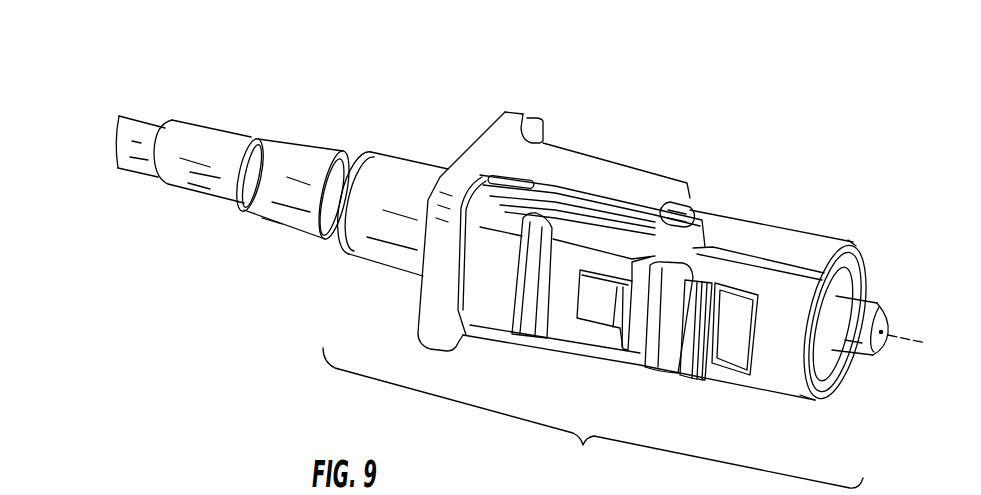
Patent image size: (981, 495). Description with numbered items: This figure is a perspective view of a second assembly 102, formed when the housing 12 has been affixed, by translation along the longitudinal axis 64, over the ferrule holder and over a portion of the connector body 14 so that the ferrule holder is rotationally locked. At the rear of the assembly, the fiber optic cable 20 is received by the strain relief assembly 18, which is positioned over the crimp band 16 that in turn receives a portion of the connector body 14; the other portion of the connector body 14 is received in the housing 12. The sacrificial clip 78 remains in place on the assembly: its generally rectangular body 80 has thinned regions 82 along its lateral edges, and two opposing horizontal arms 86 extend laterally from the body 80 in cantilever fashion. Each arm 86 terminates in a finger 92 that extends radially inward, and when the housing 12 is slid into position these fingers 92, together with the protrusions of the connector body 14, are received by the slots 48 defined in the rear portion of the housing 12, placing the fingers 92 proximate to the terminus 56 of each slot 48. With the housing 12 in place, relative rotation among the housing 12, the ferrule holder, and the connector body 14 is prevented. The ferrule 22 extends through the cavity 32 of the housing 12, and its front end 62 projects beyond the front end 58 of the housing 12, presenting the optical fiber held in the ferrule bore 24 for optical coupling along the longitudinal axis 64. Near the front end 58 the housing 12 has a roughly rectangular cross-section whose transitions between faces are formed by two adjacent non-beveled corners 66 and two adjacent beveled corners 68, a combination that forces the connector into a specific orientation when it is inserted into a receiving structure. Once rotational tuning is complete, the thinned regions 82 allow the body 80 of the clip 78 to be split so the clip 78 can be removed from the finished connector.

The housing 12 is at (701, 398).
The connector body 14 is at (578, 265).
The crimp band 16 is at (419, 153).
The strain relief assembly 18 is at (256, 133).
The fiber optic cable 20 is at (136, 109).
The ferrule 22 is at (870, 288).
The ferrule bore 24 is at (883, 332).
The cavity 32 is at (822, 360).
The slots 48 is at (663, 240).
The terminus 56 is at (704, 226).
The front end 58 is at (862, 265).
The front end 62 is at (878, 343).
The longitudinal axis 64 is at (907, 341).
The non-beveled corners 66 is at (803, 404).
The beveled corners 68 is at (853, 241).
The clip 78 is at (502, 108).
The body 80 is at (524, 114).
The thinned regions 82 is at (462, 280).
The horizontal arms 86 is at (581, 170).
The fingers 92 is at (696, 216).
The second assembly 102 is at (593, 418).